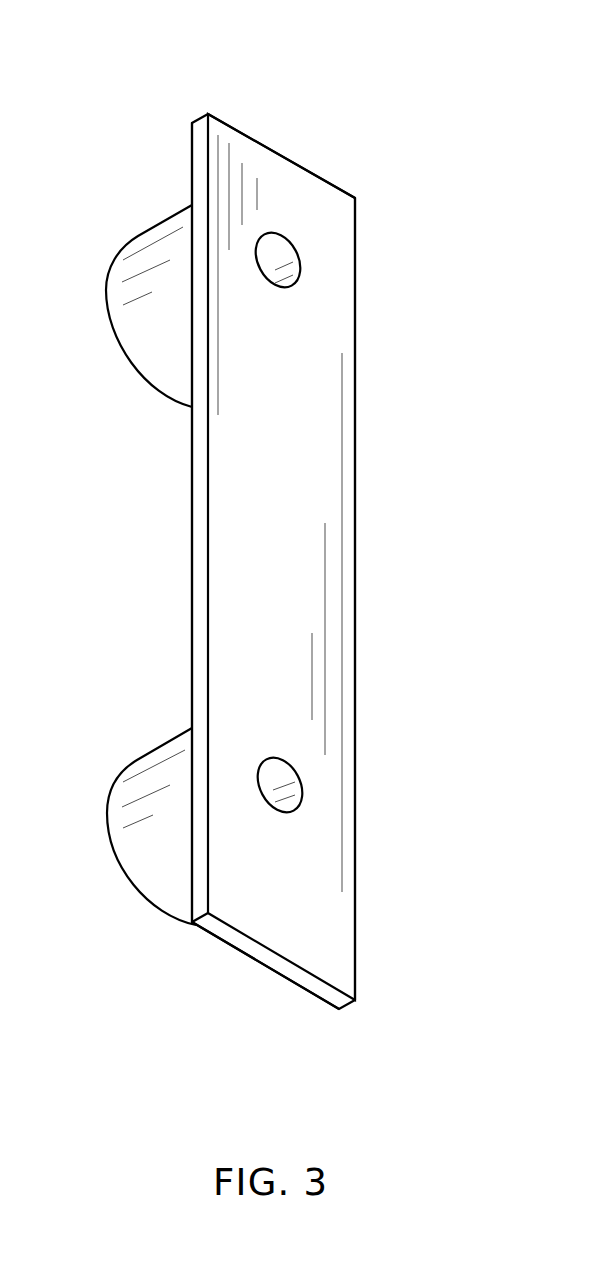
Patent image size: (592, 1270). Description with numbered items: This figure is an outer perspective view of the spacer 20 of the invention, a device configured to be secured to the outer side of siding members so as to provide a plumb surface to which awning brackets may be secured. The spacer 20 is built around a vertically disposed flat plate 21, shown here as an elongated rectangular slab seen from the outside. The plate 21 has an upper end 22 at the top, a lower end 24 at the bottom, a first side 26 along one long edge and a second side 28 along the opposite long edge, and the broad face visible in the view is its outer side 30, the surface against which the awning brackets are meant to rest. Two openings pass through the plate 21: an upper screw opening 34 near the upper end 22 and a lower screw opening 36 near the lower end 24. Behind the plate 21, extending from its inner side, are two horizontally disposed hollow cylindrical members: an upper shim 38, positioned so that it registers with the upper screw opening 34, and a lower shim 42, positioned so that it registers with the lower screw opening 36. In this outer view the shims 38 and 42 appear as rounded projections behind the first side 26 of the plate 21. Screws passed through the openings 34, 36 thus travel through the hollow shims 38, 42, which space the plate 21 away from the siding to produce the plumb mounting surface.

The spacer 20 is at (377, 182).
The flat plate 21 is at (303, 388).
The upper end 22 is at (248, 135).
The lower end 24 is at (278, 973).
The first side 26 is at (192, 512).
The second side 28 is at (355, 497).
The outer side 30 is at (253, 526).
The upper screw opening 34 is at (282, 254).
The lower screw opening 36 is at (280, 778).
The upper hollow cylindrical member or shim 38 is at (117, 299).
The lower hollow cylindrical member or shim 42 is at (107, 833).